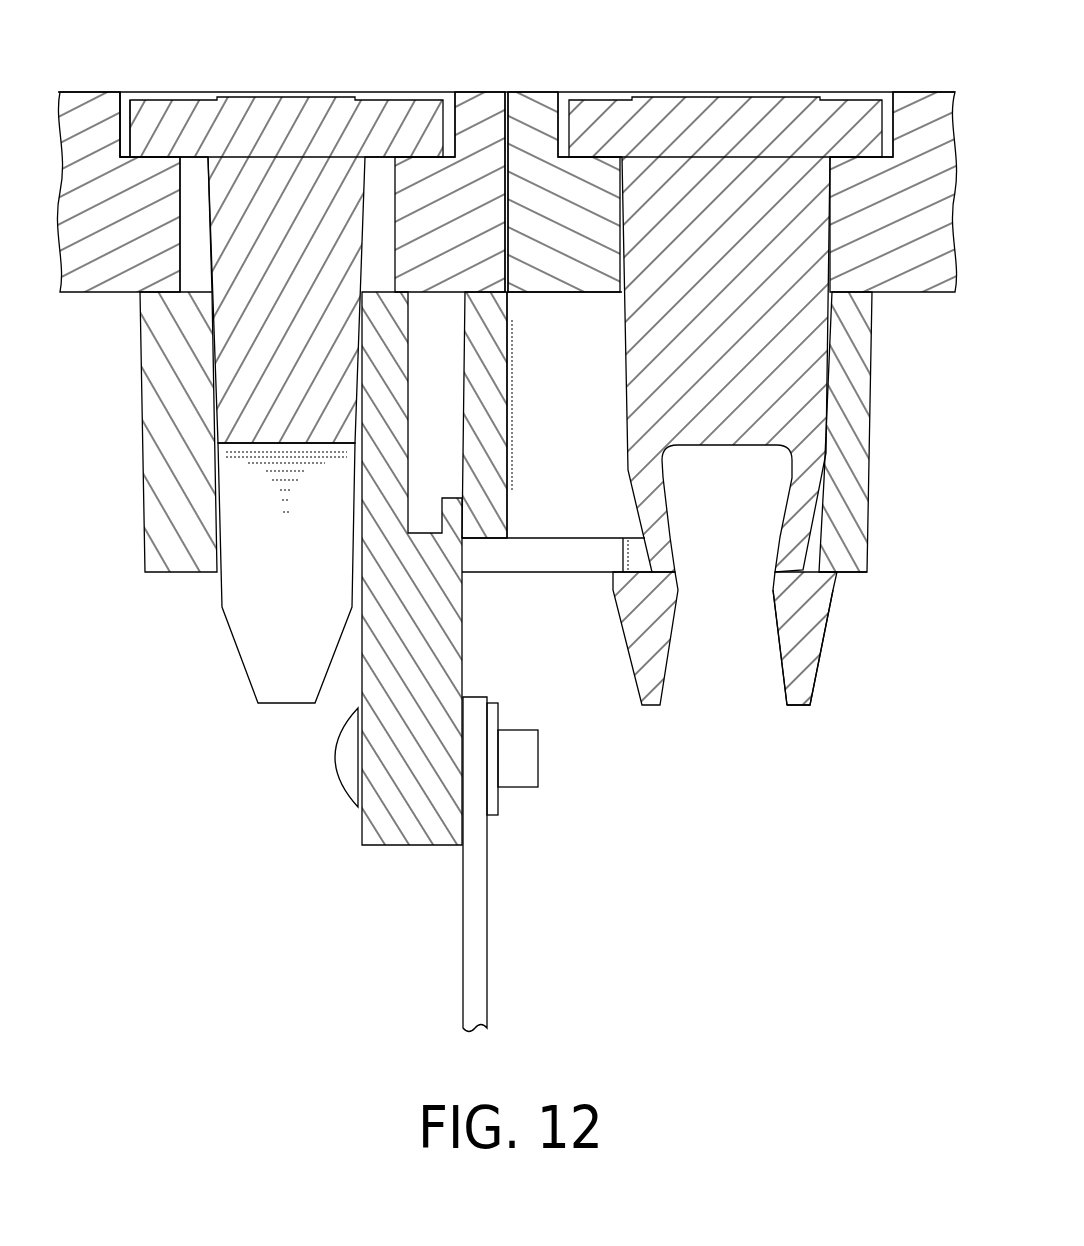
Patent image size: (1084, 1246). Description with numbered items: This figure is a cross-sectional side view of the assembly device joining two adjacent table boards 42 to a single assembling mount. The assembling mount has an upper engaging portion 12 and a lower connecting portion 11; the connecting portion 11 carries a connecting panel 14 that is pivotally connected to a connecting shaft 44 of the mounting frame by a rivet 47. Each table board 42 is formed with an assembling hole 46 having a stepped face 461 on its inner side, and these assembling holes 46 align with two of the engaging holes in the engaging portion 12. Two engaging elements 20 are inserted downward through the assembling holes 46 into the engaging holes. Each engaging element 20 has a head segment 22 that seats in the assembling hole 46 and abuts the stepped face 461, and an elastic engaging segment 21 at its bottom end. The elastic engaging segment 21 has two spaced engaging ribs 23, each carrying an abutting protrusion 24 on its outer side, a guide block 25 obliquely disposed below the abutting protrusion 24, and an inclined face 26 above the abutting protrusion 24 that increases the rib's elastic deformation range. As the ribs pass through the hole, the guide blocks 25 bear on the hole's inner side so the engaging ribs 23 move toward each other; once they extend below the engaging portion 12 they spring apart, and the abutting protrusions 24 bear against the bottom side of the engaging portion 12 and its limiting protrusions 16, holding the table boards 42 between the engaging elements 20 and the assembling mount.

The connecting portion 11 is at (352, 833).
The engaging portion 12 is at (128, 462).
The stepped face 461 is at (165, 128).
The assembling hole 46 is at (190, 295).
The engaging element 20 is at (412, 98).
The table board 42 is at (538, 97).
The head segment 22 is at (262, 107).
The elastic engaging segment 21 is at (615, 372).
The limiting protrusion 16 is at (635, 552).
The connecting panel 14 is at (405, 830).
The rivet 47 is at (345, 753).
The connecting shaft 44 is at (480, 887).
The engaging rib 23 is at (852, 625).
The guide block 25 is at (805, 688).
The inclined face 26 is at (812, 522).
The abutting protrusion 24 is at (822, 570).